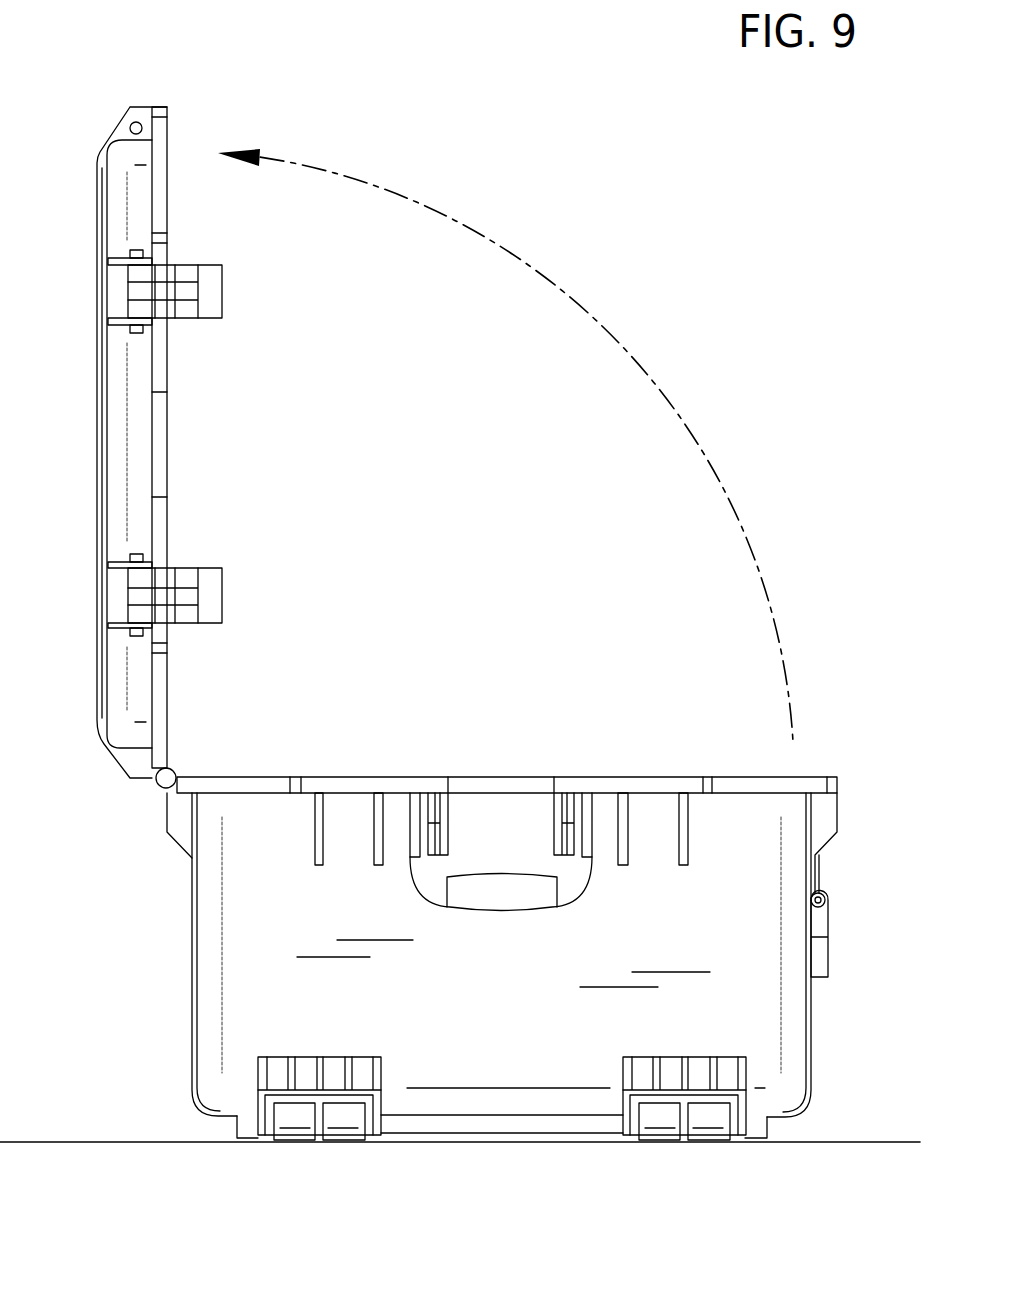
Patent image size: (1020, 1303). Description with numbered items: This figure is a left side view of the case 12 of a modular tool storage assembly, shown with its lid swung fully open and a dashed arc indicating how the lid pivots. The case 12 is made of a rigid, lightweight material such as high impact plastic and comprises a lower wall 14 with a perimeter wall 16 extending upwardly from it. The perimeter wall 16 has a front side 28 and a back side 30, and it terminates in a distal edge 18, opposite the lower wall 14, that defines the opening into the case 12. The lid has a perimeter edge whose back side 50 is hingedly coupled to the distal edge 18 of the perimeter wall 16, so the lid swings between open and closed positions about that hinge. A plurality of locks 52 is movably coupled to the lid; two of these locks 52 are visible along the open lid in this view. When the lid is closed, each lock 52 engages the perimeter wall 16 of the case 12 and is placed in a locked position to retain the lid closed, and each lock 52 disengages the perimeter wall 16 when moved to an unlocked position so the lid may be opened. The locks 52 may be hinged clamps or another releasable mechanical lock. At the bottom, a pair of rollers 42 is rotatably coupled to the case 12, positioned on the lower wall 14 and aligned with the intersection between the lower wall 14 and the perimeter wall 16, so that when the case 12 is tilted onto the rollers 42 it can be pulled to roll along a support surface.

The case 12 is at (837, 833).
The lower wall 14 is at (558, 1140).
The perimeter wall 16 is at (192, 947).
The distal edge 18 is at (795, 777).
The front side 28 is at (813, 1030).
The back side 30 is at (192, 1028).
The rollers 42 is at (357, 1142).
The back side 50 is at (142, 780).
The locks 52 is at (222, 290).